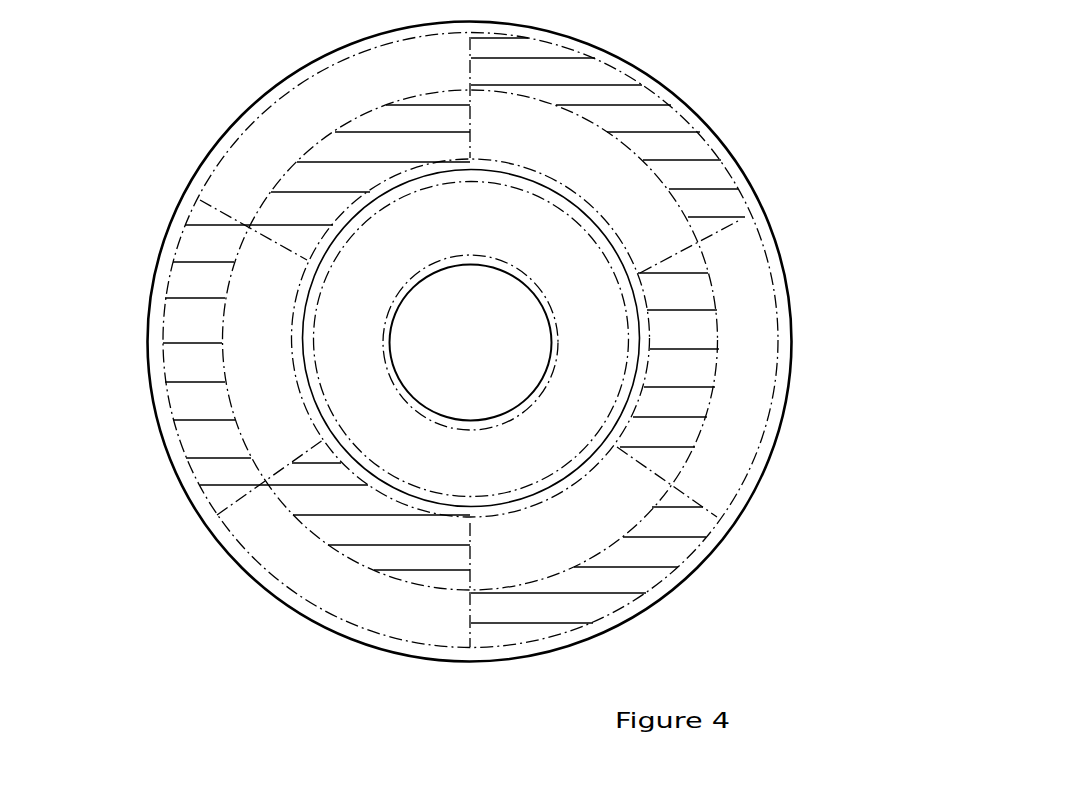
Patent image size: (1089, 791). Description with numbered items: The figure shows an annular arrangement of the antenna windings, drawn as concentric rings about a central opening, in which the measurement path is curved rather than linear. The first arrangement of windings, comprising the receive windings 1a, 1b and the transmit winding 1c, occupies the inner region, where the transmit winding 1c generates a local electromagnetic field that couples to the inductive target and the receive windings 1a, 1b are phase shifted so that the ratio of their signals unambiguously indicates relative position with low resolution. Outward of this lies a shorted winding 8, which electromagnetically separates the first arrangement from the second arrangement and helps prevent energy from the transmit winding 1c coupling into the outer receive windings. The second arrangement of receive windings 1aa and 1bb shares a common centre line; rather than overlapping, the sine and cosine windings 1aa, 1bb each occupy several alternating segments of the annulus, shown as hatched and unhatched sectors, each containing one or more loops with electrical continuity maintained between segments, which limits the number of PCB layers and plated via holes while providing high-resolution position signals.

The receive winding 1a is at (597, 337).
The receive winding 1b is at (470, 340).
The transmit winding 1c is at (470, 342).
The receive winding of second arrangement 1aa is at (627, 123).
The receive winding of second arrangement 1bb is at (720, 245).
The shorted winding 8 is at (640, 370).